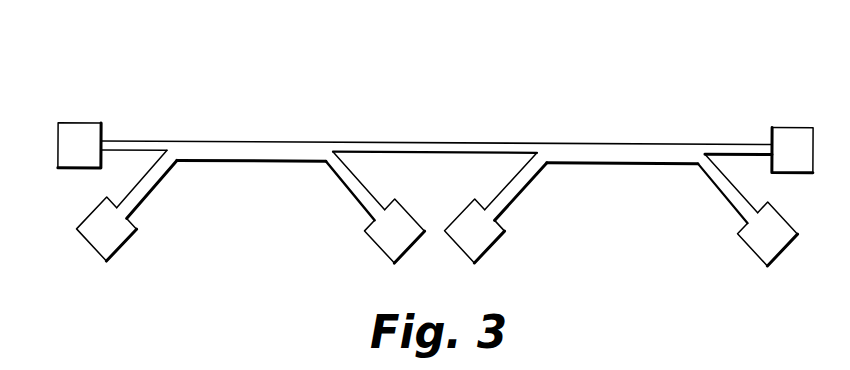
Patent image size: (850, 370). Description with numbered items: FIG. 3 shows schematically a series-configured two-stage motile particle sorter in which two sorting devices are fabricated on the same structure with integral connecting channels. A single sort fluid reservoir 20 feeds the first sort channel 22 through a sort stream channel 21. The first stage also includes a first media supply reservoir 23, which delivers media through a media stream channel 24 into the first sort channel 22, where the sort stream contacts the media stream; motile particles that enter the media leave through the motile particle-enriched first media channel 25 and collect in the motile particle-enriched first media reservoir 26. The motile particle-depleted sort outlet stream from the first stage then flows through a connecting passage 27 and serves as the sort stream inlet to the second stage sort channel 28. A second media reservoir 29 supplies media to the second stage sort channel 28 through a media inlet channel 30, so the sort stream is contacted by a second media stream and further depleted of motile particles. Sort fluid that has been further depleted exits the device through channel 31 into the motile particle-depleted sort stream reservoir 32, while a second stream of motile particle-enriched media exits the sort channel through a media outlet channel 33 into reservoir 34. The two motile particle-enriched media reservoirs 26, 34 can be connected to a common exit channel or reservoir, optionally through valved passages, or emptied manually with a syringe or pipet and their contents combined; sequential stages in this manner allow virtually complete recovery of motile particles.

The sort fluid reservoir 20 is at (87, 133).
The sort stream channel 21 is at (153, 147).
The first sort channel 22 is at (267, 152).
The first media supply reservoir 23 is at (118, 237).
The media stream channel 24 is at (148, 187).
The motile particle-enriched first media channel 25 is at (355, 188).
The motile particle-enriched first media reservoir 26 is at (382, 237).
The connecting passage 27 is at (430, 147).
The second stage sort channel 28 is at (608, 153).
The second media reservoir 29 is at (488, 238).
The media inlet channel 30 is at (513, 190).
The channel 31 is at (725, 148).
The motile particle-depleted sort stream reservoir 32 is at (790, 137).
The media outlet channel 33 is at (728, 192).
The reservoir 34 is at (757, 239).